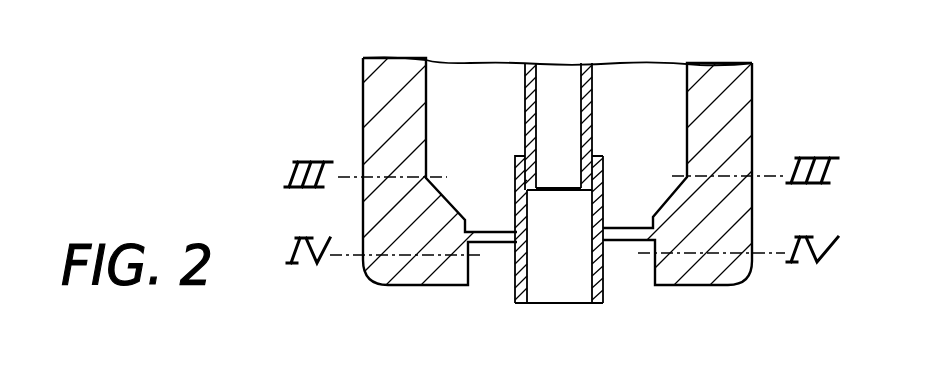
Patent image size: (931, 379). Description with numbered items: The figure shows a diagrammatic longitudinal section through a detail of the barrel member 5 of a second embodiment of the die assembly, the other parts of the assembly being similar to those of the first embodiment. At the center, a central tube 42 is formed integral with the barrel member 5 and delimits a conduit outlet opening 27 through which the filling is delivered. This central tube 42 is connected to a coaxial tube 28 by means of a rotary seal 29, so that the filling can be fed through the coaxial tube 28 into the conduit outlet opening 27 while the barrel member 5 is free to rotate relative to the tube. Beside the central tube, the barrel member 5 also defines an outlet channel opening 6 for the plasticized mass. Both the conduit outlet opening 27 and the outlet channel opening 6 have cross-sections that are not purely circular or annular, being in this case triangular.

The barrel member 5 is at (377, 100).
The outlet channel opening 6 is at (630, 273).
The coaxial tube 28 is at (525, 123).
The rotary seal 29 is at (603, 172).
The central tube 42 is at (513, 272).
The conduit outlet opening 27 is at (553, 283).